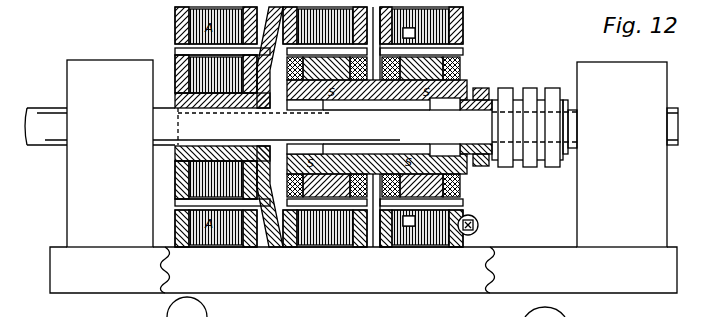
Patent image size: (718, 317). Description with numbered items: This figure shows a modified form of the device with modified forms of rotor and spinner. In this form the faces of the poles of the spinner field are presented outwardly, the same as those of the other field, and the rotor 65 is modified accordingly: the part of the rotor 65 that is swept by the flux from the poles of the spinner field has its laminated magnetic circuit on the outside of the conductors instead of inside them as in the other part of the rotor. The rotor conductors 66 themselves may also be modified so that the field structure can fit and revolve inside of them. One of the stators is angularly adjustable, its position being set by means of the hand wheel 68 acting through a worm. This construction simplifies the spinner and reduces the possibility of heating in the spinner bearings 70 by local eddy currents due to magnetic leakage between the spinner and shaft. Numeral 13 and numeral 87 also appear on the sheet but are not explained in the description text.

The magnetic clutch unit 13 is at (428, 42).
The rotor 65 is at (229, 149).
The rotor conductors 66 is at (176, 51).
The hand wheel 68 is at (480, 223).
The spinner bearings 70 is at (311, 112).
The adjacent figure element 87 is at (197, 307).